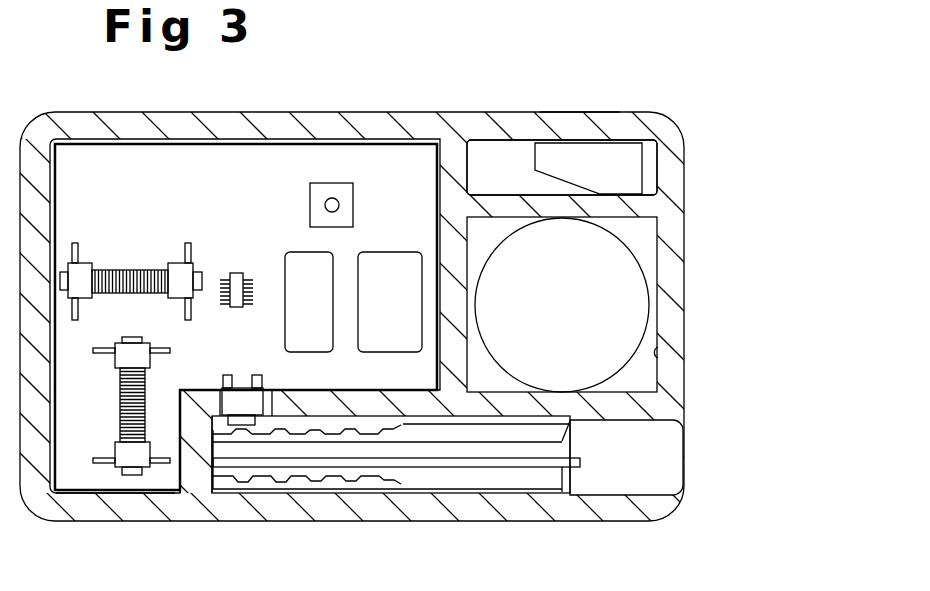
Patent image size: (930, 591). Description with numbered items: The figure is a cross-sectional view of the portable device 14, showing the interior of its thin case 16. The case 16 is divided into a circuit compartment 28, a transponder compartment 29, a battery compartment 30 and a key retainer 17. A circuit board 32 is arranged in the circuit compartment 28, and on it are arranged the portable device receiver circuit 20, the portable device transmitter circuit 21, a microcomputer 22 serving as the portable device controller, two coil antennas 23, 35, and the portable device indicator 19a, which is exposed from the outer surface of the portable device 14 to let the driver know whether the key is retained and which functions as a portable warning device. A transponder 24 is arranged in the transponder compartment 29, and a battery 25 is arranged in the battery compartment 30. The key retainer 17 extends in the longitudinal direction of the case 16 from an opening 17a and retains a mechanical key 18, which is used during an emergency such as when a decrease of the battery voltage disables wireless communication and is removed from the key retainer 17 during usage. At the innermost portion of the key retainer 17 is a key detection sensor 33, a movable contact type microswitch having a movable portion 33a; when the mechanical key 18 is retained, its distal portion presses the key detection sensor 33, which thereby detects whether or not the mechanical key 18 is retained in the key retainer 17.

The portable device 14 is at (692, 89).
The case 16 is at (567, 120).
The key retainer 17 is at (328, 497).
The opening 17a is at (680, 490).
The mechanical key 18 is at (472, 477).
The portable device indicator 19a is at (328, 187).
The portable device receiver circuit 20 is at (296, 257).
The portable device transmitter circuit 21 is at (385, 256).
The microcomputer 22 is at (238, 276).
The coil antenna 23 is at (108, 295).
The transponder 24 is at (630, 167).
The battery 25 is at (638, 308).
The circuit compartment 28 is at (82, 493).
The transponder compartment 29 is at (498, 142).
The battery compartment 30 is at (658, 353).
The circuit board 32 is at (167, 484).
The key detection sensor 33 is at (240, 390).
The movable portion 33a is at (240, 428).
The coil antenna 35 is at (118, 397).